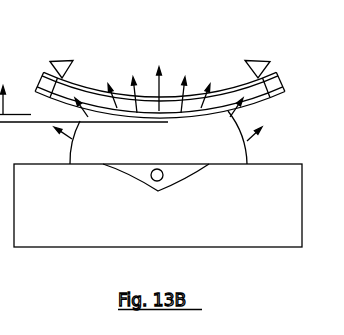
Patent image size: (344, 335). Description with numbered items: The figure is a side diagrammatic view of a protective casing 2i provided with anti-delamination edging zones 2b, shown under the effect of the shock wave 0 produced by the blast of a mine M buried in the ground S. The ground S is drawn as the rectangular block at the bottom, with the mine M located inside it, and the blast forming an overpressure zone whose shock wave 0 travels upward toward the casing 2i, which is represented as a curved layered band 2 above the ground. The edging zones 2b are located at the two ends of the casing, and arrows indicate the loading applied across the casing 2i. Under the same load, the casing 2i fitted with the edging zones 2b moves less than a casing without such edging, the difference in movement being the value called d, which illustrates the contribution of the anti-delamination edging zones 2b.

The membrane / film 2 is at (231, 82).
The casing 2i is at (94, 100).
The anti-delamination edging zone 2b is at (47, 80).
The shock wave 0 is at (252, 142).
The ground S is at (61, 247).
The mine M is at (160, 186).